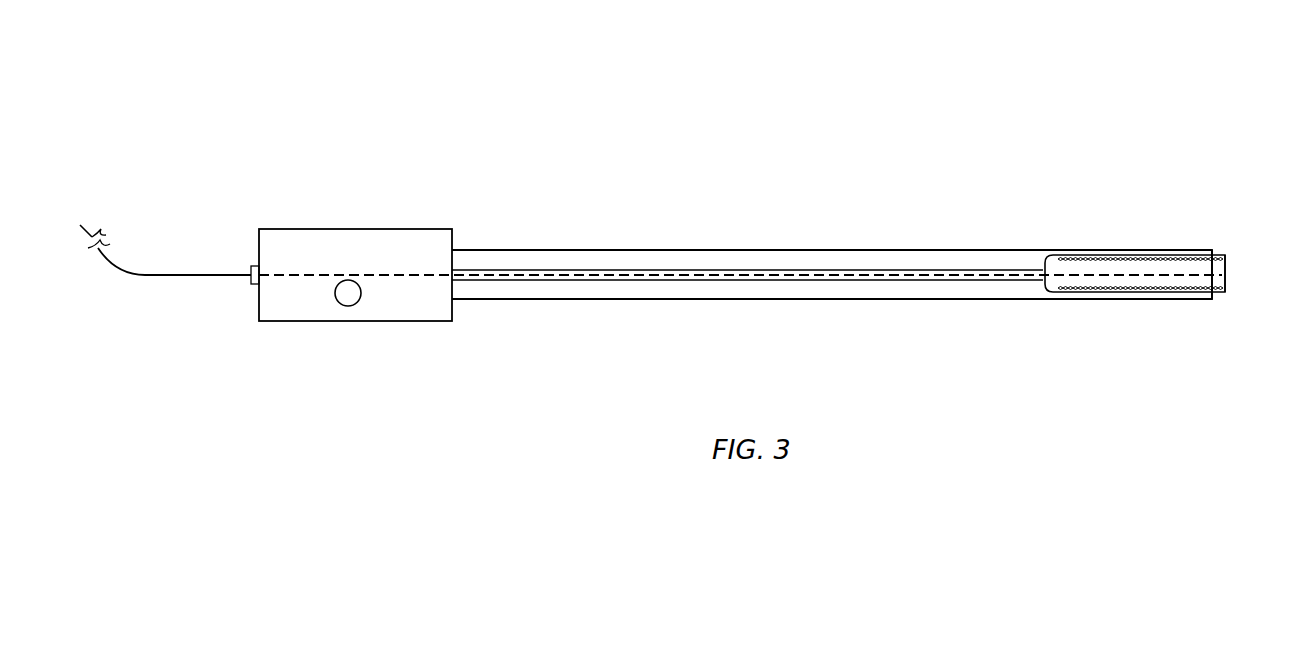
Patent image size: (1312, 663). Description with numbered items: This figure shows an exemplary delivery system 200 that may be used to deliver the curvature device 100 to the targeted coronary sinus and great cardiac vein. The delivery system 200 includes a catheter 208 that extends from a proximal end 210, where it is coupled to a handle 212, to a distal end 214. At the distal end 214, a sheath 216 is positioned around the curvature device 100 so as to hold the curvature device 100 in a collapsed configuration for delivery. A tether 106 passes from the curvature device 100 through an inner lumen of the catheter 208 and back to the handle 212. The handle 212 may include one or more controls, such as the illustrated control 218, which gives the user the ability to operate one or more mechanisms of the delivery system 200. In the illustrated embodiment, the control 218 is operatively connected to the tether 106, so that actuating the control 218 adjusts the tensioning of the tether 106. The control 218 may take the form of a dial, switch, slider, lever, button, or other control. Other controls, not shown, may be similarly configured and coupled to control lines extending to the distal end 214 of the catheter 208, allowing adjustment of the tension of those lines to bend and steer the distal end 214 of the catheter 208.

The delivery system 200 is at (562, 86).
The tether 106 is at (203, 275).
The handle 212 is at (364, 229).
The control 218 is at (348, 293).
The catheter 208 is at (900, 250).
The proximal end 210 is at (533, 299).
The sheath 216 is at (1163, 255).
The distal end 214 is at (1170, 299).
The curvature device 100 is at (1225, 287).